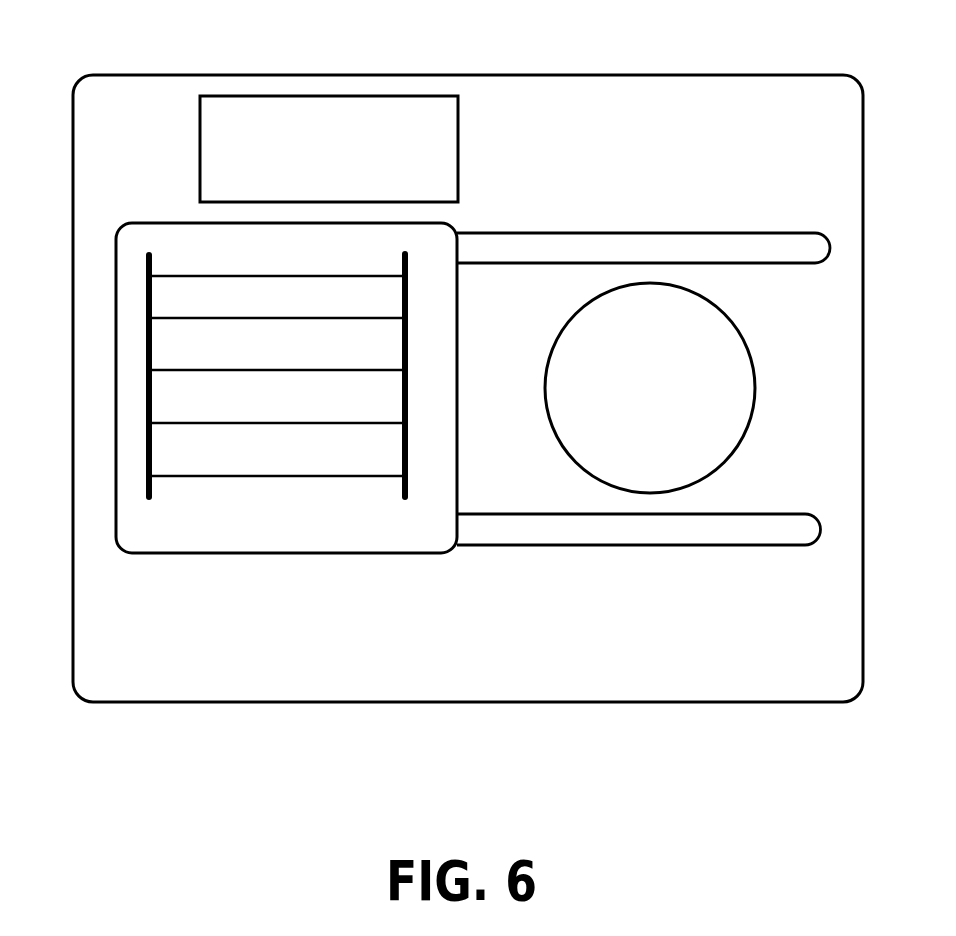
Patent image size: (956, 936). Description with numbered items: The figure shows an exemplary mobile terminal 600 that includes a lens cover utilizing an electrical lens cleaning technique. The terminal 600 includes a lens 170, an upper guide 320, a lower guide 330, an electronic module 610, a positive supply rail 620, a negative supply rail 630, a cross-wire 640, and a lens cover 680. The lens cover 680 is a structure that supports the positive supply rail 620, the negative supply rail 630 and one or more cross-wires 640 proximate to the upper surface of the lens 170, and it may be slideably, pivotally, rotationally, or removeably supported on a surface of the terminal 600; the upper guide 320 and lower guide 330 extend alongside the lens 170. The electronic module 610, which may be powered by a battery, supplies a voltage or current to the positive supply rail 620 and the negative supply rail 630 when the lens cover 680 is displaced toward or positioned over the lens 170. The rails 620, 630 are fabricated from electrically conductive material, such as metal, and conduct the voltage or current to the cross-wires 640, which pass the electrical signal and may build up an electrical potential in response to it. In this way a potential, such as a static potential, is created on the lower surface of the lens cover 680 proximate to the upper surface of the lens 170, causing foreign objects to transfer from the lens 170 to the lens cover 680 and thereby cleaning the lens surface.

The terminal 600 is at (468, 359).
The electronic module 610 is at (329, 149).
The positive supply rail 620 is at (82, 376).
The negative supply rail 630 is at (461, 375).
The cross-wire 640 is at (277, 402).
The lens cover 680 is at (286, 413).
The upper guide 320 is at (643, 224).
The lower guide 330 is at (639, 558).
The lens 170 is at (685, 388).